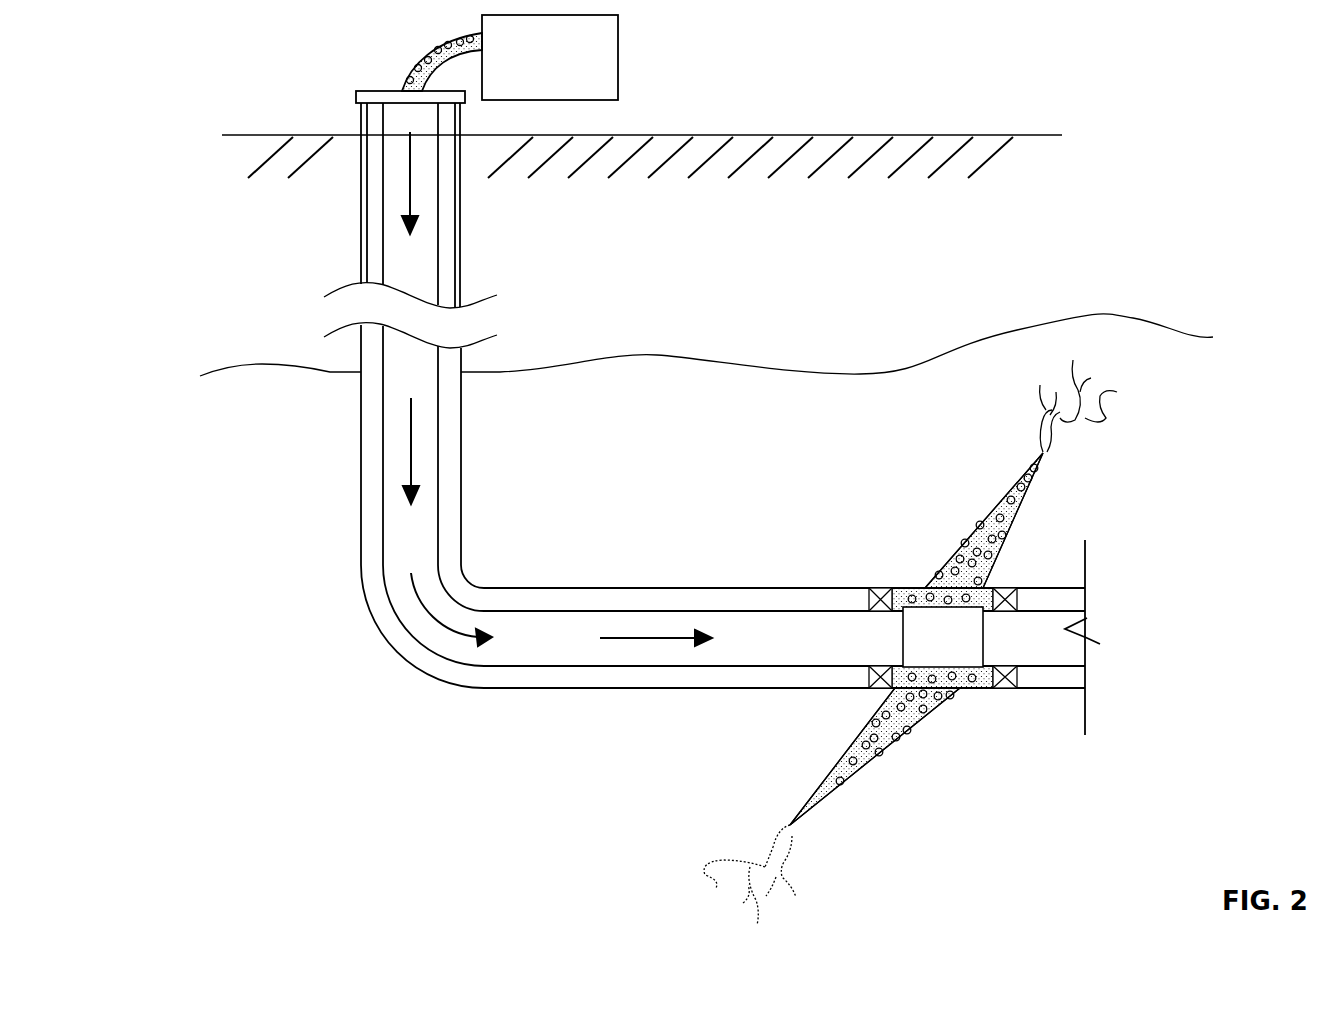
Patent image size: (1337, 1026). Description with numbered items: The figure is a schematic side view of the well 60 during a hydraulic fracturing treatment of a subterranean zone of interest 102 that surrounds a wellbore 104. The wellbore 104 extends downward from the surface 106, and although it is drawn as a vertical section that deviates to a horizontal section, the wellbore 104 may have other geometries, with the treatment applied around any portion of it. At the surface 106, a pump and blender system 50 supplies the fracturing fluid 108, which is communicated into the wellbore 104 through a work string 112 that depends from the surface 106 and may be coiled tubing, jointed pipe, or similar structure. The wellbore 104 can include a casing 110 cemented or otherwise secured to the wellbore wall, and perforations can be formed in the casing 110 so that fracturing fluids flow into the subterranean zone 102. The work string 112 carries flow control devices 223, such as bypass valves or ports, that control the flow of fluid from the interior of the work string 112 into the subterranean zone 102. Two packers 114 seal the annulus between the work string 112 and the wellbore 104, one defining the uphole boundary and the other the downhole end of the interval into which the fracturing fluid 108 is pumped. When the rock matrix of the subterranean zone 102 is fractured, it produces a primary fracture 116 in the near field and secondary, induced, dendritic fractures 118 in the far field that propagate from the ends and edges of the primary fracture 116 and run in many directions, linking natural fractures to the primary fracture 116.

The pump and blender system 50 is at (566, 79).
The well 60 is at (368, 684).
The subterranean zone of interest 102 is at (746, 410).
The wellbore 104 is at (372, 233).
The surface 106 is at (838, 134).
The fracturing fluid 108 is at (430, 60).
The casing 110 is at (363, 271).
The work string 112 is at (383, 497).
The packers 114 is at (878, 587).
The primary fracture 116 is at (963, 520).
The secondary fractures 118 is at (1024, 387).
The flow control devices 223 is at (966, 651).